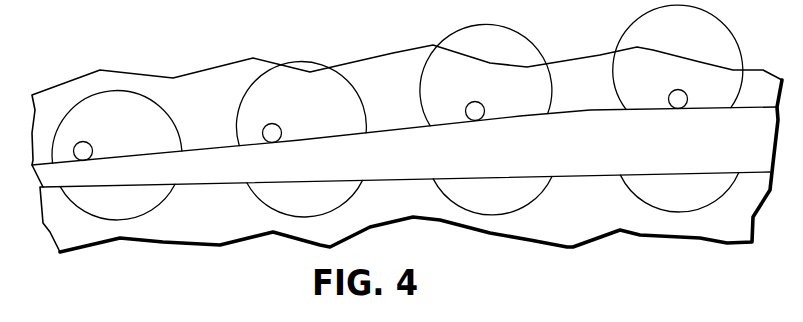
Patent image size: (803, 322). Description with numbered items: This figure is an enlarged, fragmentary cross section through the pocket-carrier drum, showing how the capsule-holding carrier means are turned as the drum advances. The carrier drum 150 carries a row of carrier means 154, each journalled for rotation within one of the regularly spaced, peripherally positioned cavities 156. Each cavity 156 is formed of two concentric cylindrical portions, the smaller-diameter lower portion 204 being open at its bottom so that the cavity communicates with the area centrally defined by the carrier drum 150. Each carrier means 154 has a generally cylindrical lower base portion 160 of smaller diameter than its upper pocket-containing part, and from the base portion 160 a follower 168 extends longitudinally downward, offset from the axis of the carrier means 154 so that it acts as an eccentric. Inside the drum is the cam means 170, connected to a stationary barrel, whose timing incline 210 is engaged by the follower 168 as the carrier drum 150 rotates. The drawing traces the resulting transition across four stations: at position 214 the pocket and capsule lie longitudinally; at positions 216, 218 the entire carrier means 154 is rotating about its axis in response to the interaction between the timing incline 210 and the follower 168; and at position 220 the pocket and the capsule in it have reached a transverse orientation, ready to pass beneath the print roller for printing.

The carrier drum 150 is at (400, 51).
The carrier means 154 is at (143, 118).
The cavities 156 is at (252, 187).
The lower base portion 160 is at (260, 108).
The follower 168 is at (84, 141).
The cam means 170 is at (392, 182).
The lower portion 204 is at (254, 195).
The timing incline 210 is at (399, 134).
The position 214 is at (117, 130).
The position 216 is at (315, 114).
The position 218 is at (491, 108).
The position 220 is at (710, 97).